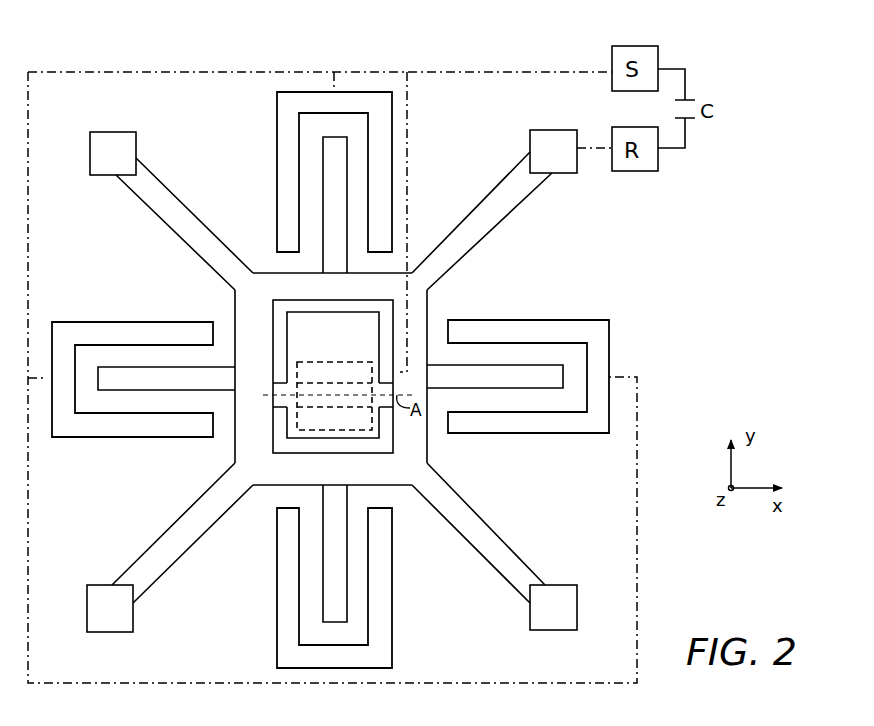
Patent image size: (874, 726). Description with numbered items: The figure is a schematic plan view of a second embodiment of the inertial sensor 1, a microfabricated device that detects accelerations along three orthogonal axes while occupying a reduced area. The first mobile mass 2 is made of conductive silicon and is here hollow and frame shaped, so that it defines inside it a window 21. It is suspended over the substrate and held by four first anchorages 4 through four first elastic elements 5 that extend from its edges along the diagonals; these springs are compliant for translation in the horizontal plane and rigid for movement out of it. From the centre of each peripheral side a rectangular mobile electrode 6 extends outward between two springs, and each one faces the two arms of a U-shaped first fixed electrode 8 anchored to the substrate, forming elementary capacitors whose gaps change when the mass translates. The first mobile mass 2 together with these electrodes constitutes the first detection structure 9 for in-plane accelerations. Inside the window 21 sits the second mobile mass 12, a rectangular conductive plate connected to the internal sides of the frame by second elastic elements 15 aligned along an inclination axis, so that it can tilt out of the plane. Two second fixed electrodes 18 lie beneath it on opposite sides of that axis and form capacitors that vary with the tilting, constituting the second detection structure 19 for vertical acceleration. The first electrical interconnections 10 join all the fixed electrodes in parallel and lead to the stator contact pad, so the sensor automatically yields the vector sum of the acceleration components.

The inertial sensor 1 is at (687, 240).
The first mobile mass 2 is at (257, 300).
The first anchorages 4 is at (118, 153).
The first elastic elements 5 is at (176, 193).
The mobile electrodes 6 is at (323, 265).
The first fixed electrodes 8 is at (262, 182).
The first detection structure 9 is at (425, 170).
The first electrical interconnections 10 is at (263, 72).
The second mobile mass 12 is at (363, 318).
The second elastic elements 15 is at (393, 395).
The second fixed electrodes 18 is at (297, 412).
The second detection structure 19 is at (287, 447).
The window 21 is at (373, 447).